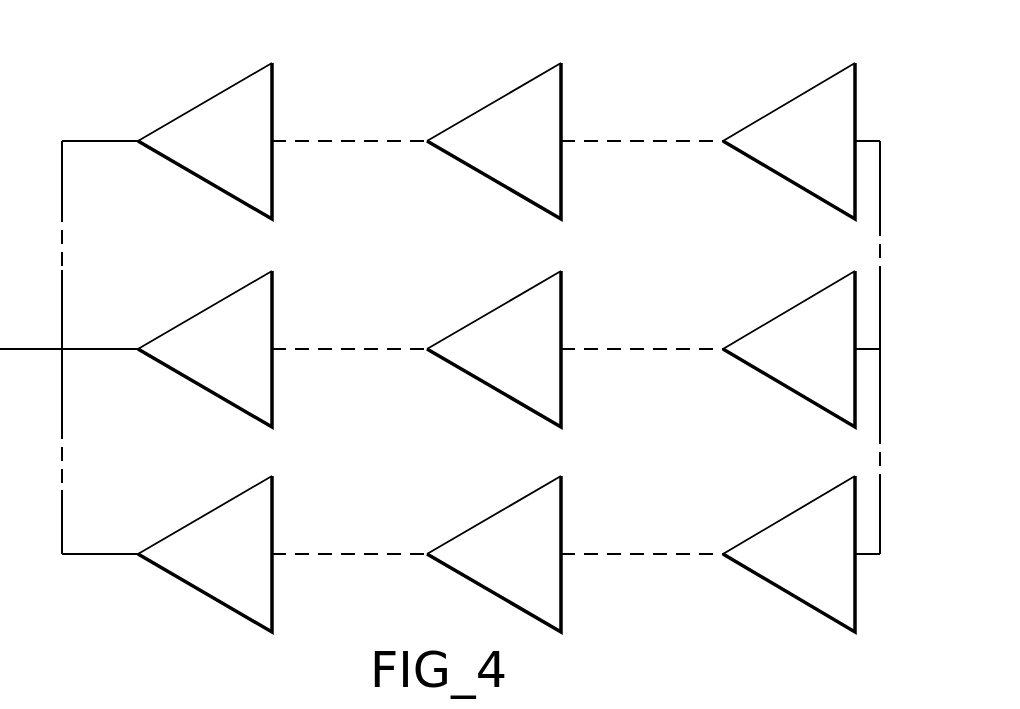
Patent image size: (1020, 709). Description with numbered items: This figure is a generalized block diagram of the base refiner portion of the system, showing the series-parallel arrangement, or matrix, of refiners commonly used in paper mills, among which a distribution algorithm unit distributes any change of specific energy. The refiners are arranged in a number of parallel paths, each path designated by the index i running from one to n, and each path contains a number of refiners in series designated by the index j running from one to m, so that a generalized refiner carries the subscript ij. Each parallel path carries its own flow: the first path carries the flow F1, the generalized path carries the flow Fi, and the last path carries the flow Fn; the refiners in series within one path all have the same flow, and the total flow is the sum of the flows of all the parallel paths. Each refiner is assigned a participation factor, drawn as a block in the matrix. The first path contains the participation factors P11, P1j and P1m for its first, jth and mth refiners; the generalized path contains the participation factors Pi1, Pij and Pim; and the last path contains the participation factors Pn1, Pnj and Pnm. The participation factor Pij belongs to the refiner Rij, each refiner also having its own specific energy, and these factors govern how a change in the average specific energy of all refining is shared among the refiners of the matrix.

The flow through first parallel path F1 is at (100, 121).
The flow through refiners of parallel path i Fi is at (69, 331).
The flow through nth parallel path Fn is at (100, 537).
The participation factor for refiner R11 P11 is at (205, 141).
The participation factor for refiner R1j P1j is at (494, 141).
The participation factor for refiner R1m P1m is at (789, 141).
The participation factor for refiner Ri1 Pi1 is at (205, 349).
The participation factor for refiner Rij Pij is at (494, 349).
The participation factor for refiner Rim Pim is at (789, 349).
The participation factor for refiner Rn1 Pn1 is at (205, 554).
The participation factor for refiner Rnj Pnj is at (494, 554).
The participation factor for refiner Rnm Pnm is at (789, 554).